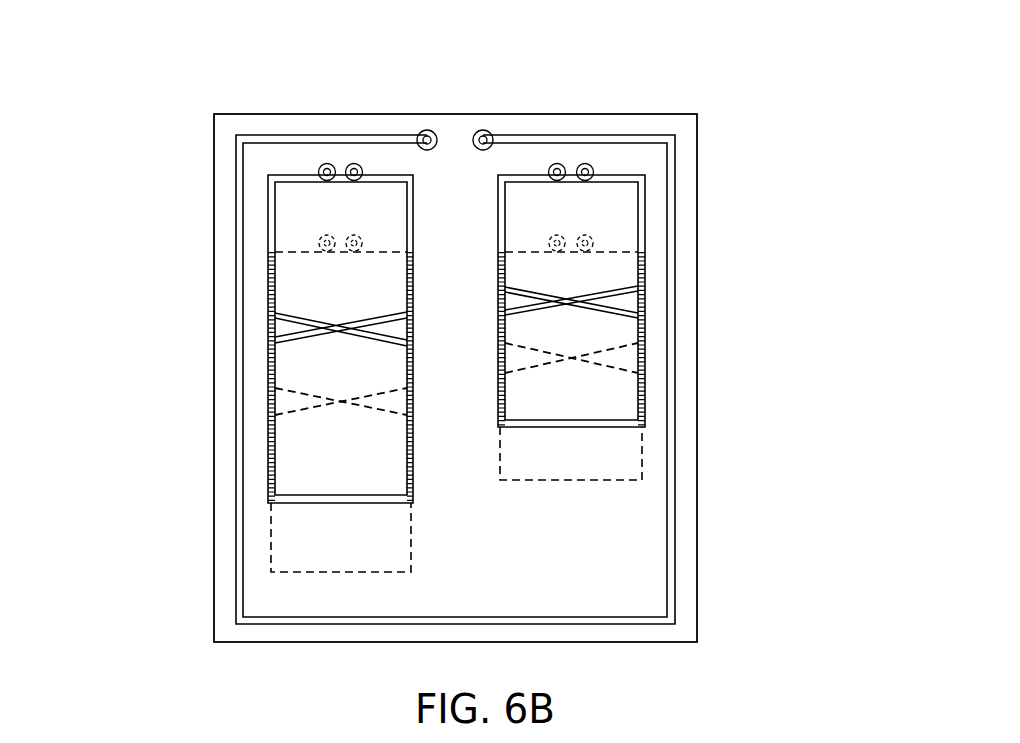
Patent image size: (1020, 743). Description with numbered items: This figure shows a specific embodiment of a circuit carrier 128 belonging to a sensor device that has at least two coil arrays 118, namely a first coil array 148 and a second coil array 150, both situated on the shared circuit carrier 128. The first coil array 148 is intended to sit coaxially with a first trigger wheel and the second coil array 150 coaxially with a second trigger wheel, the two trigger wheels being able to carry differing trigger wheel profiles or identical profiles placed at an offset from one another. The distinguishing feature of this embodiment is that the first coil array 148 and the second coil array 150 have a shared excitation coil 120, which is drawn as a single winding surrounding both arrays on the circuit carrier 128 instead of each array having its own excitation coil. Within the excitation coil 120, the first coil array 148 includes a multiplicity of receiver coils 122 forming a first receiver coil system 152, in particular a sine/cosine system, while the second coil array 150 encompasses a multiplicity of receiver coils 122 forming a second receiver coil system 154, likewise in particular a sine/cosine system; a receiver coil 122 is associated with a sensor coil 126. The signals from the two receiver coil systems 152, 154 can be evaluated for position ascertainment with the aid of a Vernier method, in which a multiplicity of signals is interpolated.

The coil array 118 is at (473, 294).
The first coil array 148 is at (342, 108).
The second coil array 150 is at (580, 108).
The excitation coil 120 is at (669, 208).
The receiver coil 122 is at (455, 335).
The sensor coil 126 is at (455, 335).
The circuit carrier 128 is at (689, 126).
The first receiver coil system 152 is at (270, 299).
The second receiver coil system 154 is at (645, 284).